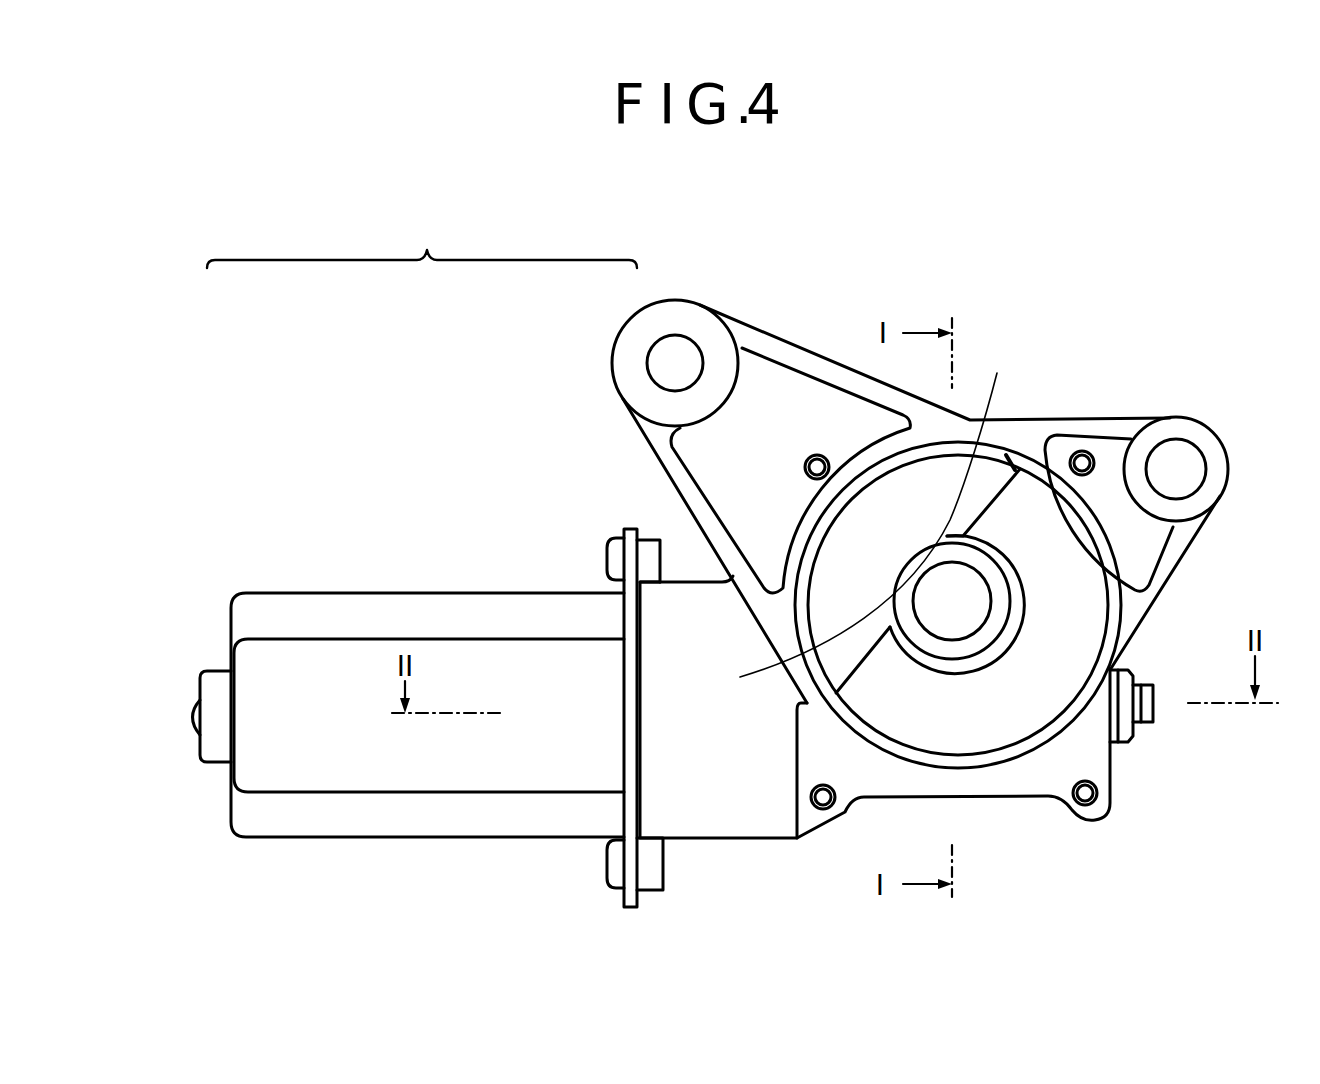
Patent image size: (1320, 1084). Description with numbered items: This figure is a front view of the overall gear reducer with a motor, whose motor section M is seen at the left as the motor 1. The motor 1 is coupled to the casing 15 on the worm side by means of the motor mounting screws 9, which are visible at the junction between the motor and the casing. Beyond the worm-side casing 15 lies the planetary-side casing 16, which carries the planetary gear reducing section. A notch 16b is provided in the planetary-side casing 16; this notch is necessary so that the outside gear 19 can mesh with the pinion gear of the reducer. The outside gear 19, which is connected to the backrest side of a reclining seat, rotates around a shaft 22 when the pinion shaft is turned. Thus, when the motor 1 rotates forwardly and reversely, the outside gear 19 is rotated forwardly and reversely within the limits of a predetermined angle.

The motor 1 is at (457, 613).
The motor mounting screws 9 is at (612, 560).
The casing 15 is at (722, 818).
The planetary-side casing 16 is at (1216, 424).
The notch 16b is at (1008, 458).
The outside gear 19 is at (1003, 393).
The shaft 22 is at (676, 362).
The motor section M is at (422, 240).